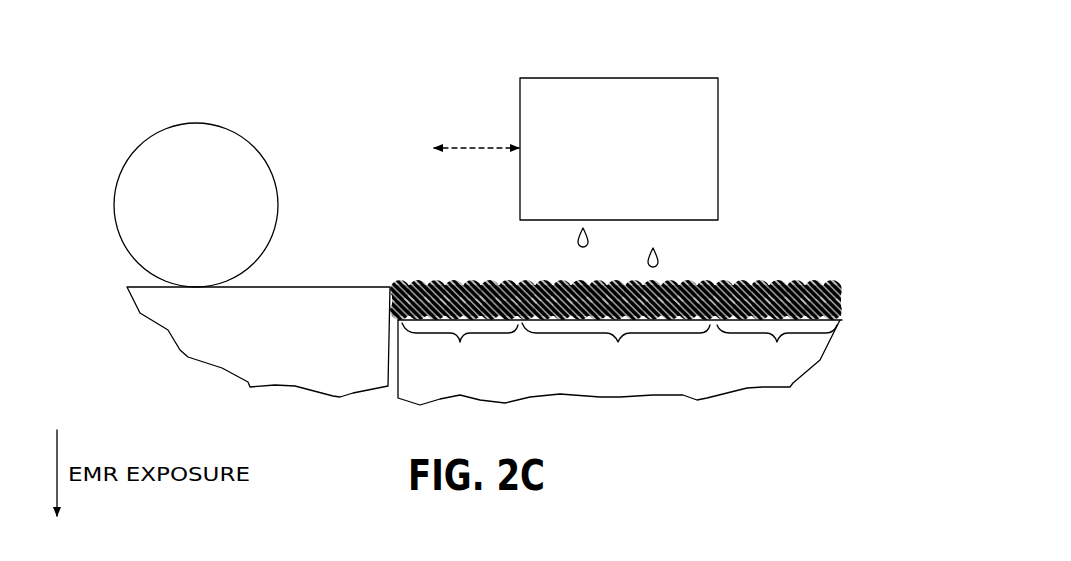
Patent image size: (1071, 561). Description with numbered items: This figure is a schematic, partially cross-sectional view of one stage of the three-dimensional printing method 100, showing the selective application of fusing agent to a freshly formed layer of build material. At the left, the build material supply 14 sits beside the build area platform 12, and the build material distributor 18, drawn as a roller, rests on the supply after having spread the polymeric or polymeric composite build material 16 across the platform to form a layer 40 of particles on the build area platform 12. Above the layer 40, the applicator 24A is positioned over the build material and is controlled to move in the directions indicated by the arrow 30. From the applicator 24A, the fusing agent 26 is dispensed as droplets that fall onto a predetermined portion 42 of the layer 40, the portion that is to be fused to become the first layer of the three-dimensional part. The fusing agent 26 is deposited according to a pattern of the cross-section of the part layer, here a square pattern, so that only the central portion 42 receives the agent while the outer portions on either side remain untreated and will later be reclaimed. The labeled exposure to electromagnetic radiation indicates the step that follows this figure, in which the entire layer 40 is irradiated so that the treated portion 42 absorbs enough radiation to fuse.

The 3D printing method 100 is at (251, 101).
The build material distributor 18 is at (273, 175).
The build material supply 14 is at (257, 288).
The build area platform 12 is at (690, 368).
The polymeric or polymeric composite build material 16 is at (842, 287).
The portion 42 is at (616, 348).
The applicator 24A is at (618, 78).
The arrow 30 is at (470, 147).
The layer 40 is at (496, 266).
The fusing agent 26 is at (648, 252).